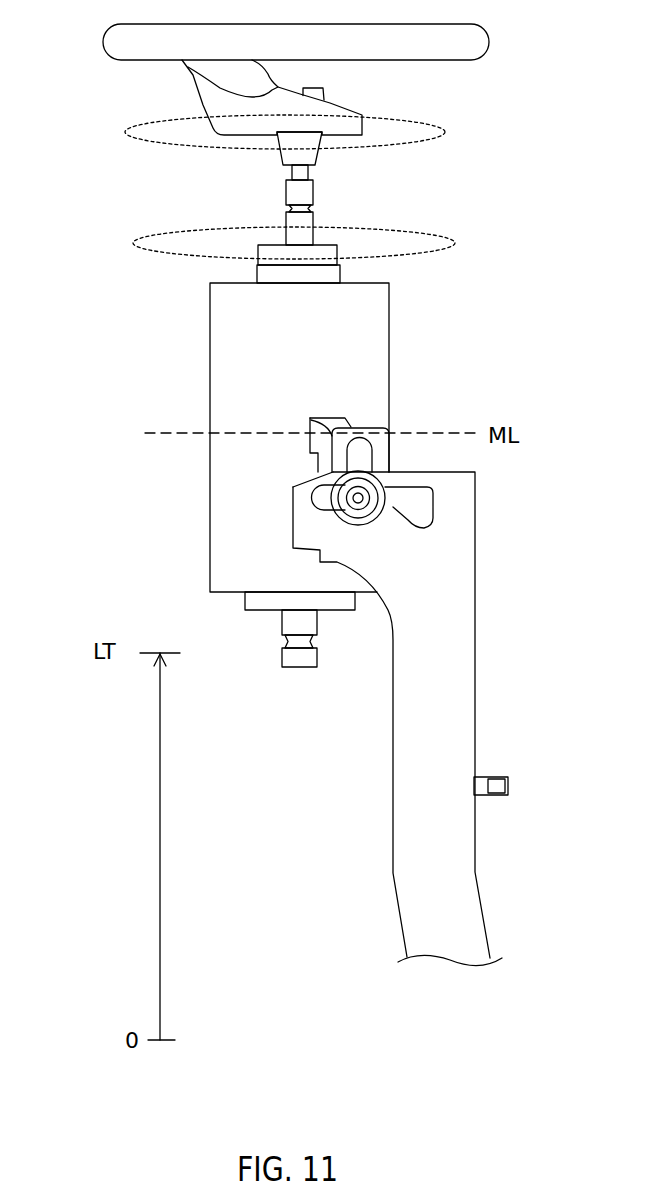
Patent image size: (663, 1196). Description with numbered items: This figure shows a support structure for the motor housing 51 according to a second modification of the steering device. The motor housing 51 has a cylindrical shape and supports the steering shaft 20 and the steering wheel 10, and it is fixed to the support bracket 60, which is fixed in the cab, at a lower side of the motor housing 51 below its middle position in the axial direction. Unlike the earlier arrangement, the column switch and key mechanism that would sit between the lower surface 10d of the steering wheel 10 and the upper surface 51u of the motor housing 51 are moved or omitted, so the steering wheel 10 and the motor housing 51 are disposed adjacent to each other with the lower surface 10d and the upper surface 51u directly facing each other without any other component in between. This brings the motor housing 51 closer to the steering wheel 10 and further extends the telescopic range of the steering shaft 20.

The steering wheel 10 is at (190, 77).
The lower surface of steering wheel 10d is at (125, 130).
The steering shaft 20 is at (313, 187).
The upper surface of motor housing 51u is at (133, 242).
The motor housing 51 is at (230, 528).
The support bracket 60 is at (452, 655).